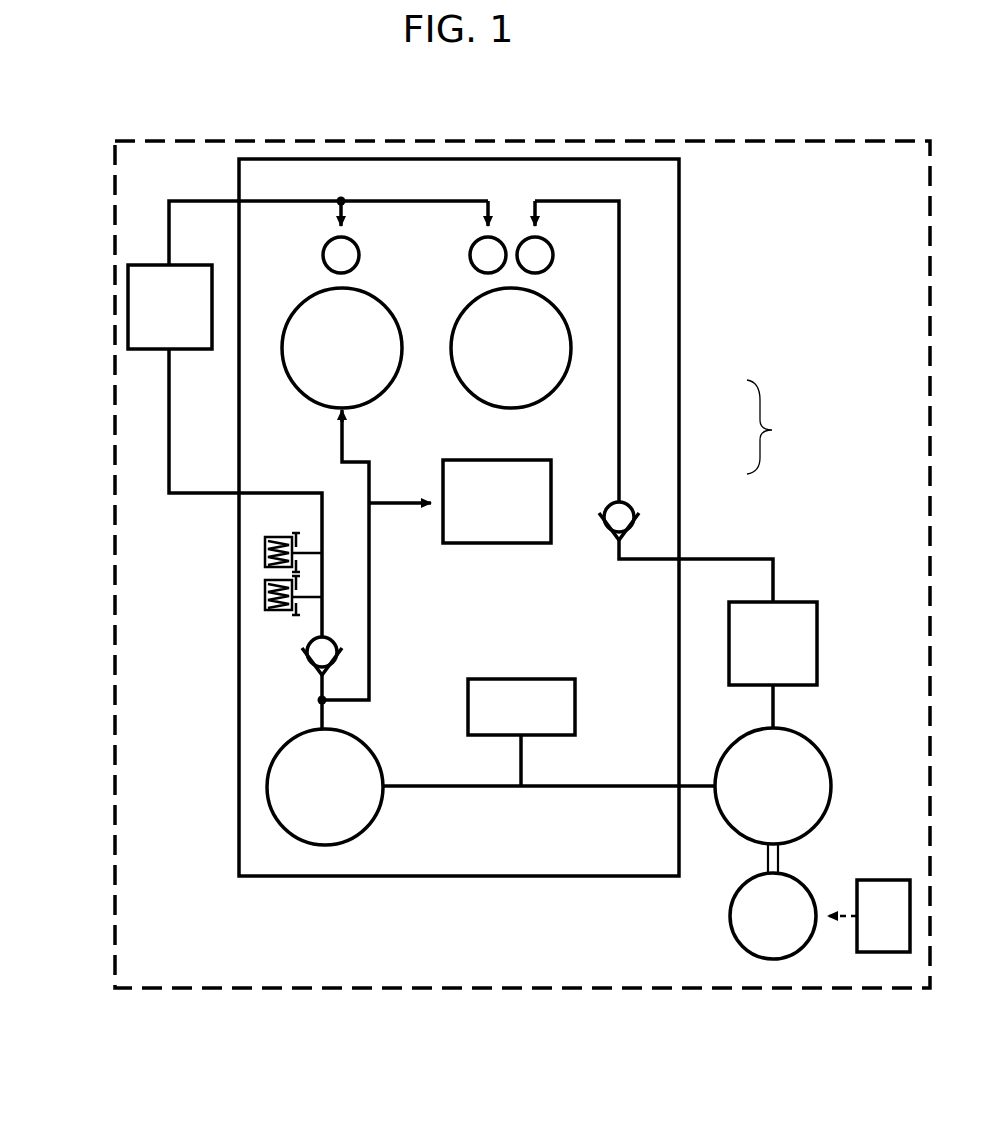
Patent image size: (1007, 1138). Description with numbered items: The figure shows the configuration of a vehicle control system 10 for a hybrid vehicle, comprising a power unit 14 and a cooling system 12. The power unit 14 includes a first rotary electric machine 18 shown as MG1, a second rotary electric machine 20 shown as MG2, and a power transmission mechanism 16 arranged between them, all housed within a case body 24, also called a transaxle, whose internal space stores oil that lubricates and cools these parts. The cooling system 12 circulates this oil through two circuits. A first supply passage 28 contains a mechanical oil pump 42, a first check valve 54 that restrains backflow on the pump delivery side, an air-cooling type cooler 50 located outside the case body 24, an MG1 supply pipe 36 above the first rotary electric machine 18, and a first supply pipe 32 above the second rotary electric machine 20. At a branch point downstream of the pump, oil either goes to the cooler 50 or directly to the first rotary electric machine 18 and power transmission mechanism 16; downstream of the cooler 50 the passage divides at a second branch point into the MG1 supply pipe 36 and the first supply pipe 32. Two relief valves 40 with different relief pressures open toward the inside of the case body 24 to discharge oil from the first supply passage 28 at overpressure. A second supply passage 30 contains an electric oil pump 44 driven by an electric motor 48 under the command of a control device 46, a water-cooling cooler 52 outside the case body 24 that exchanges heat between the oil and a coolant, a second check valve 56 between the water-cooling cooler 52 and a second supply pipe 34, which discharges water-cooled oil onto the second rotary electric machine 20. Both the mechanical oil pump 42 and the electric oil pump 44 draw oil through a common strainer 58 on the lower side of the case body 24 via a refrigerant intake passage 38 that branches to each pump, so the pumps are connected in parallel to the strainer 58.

The vehicle control system 10 is at (176, 128).
The cooling system 12 is at (200, 989).
The power unit 14 is at (777, 427).
The power transmission mechanism 16 is at (551, 485).
The first rotary electric machine 18 is at (385, 395).
The second rotary electric machine 20 is at (570, 352).
The case body 24 is at (348, 877).
The first supply passage 28 is at (285, 201).
The second supply passage 30 is at (619, 260).
The first supply pipe 32 is at (478, 238).
The second supply pipe 34 is at (545, 238).
The MG1 supply pipe 36 is at (355, 238).
The refrigerant intake passage 38 is at (521, 762).
The relief valve 40 is at (265, 553).
The mechanical oil pump 42 is at (267, 787).
The electric oil pump 44 is at (832, 778).
The control device 46 is at (883, 953).
The electric motor 48 is at (773, 959).
The cooler 50 is at (128, 310).
The water-cooling cooler 52 is at (817, 643).
The first check valve 54 is at (302, 652).
The second check valve 56 is at (640, 520).
The strainer 58 is at (553, 736).